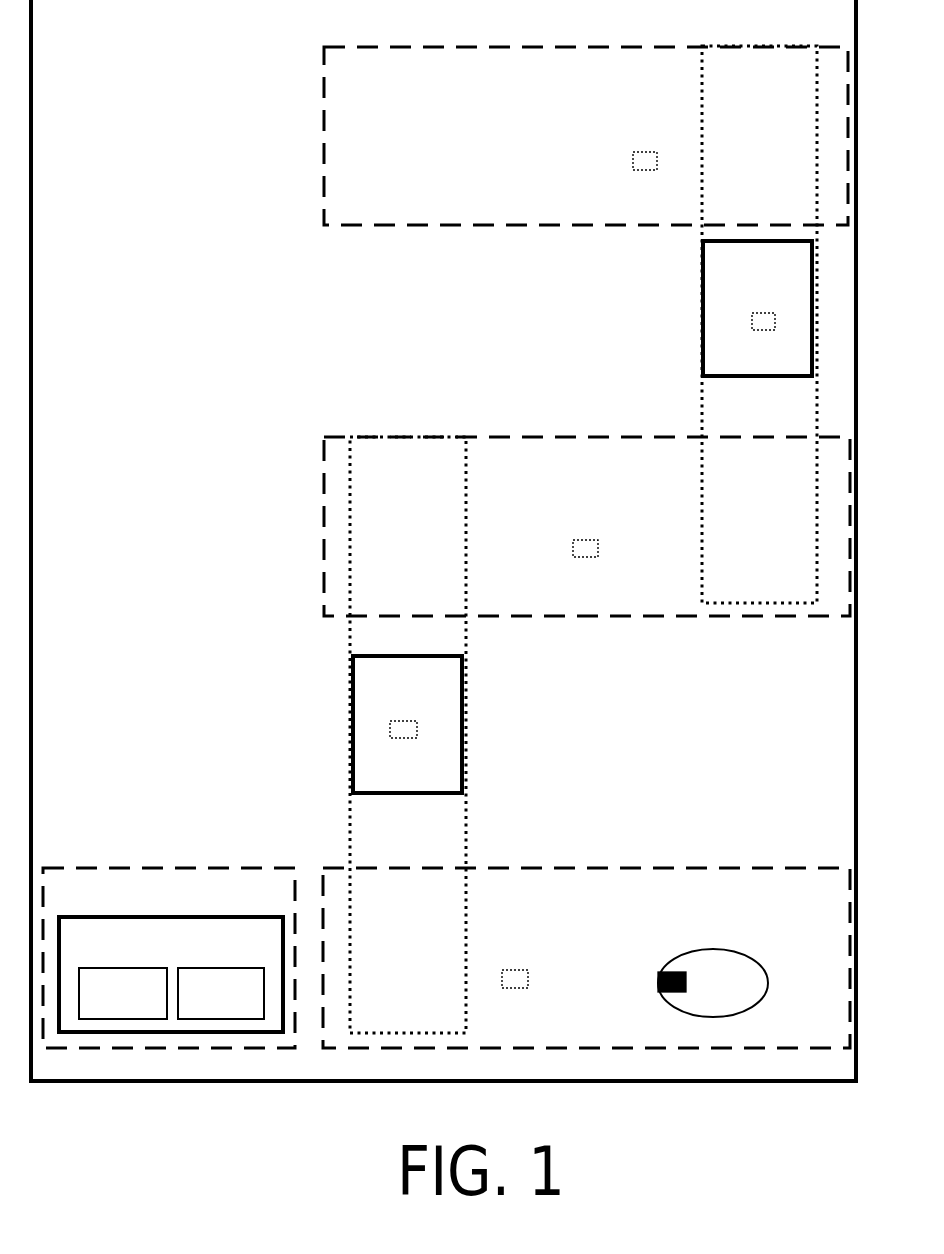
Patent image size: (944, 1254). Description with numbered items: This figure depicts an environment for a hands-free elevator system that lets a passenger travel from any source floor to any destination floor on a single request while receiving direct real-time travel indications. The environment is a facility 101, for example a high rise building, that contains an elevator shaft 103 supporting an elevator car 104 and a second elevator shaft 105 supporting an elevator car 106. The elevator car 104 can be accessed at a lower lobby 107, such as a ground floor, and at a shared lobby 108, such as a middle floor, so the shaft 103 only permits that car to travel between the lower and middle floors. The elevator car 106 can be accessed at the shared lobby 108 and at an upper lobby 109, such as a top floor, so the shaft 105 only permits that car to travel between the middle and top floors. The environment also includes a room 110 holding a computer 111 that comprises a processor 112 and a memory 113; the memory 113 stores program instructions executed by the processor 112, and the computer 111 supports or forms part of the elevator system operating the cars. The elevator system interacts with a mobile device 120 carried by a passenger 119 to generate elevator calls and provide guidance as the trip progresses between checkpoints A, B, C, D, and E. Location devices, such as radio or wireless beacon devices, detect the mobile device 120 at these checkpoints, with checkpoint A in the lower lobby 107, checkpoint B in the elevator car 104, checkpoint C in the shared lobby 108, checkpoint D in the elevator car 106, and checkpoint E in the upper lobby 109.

The facility 101 is at (201, 31).
The elevator shaft 103 is at (428, 502).
The elevator car 104 is at (428, 781).
The elevator shaft 105 is at (779, 114).
The elevator car 106 is at (778, 364).
The lower lobby 107 is at (833, 904).
The shared lobby 108 is at (688, 471).
The upper lobby 109 is at (531, 84).
The room 110 is at (279, 904).
The computer 111 is at (111, 952).
The processor 112 is at (143, 1006).
The memory 113 is at (241, 1006).
The passenger 119 is at (733, 997).
The mobile device 120 is at (670, 971).
The checkpoint A is at (513, 968).
The checkpoint B is at (402, 720).
The checkpoint C is at (585, 538).
The checkpoint D is at (763, 312).
The checkpoint E is at (645, 150).